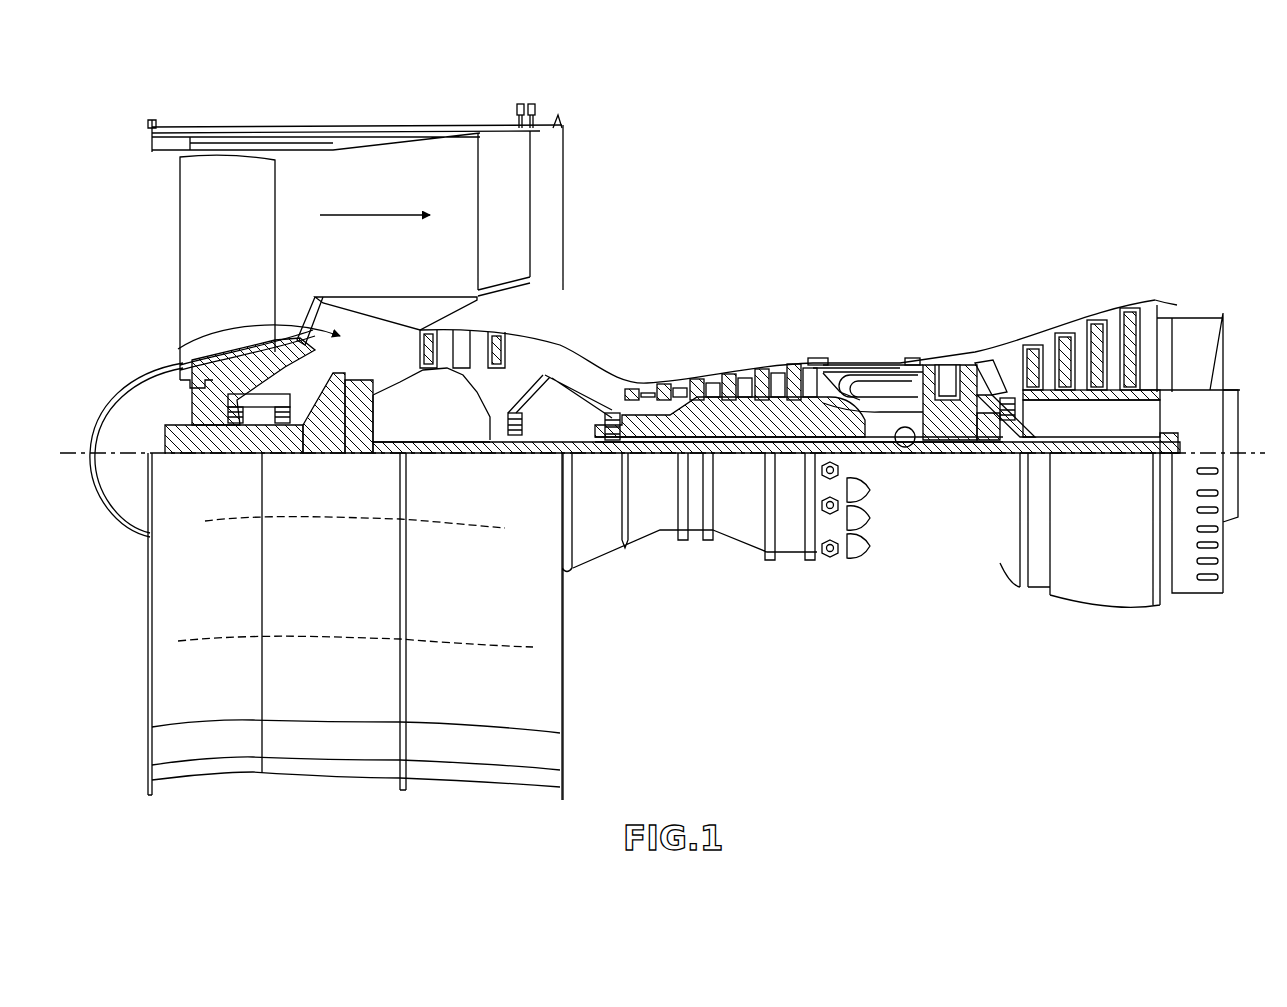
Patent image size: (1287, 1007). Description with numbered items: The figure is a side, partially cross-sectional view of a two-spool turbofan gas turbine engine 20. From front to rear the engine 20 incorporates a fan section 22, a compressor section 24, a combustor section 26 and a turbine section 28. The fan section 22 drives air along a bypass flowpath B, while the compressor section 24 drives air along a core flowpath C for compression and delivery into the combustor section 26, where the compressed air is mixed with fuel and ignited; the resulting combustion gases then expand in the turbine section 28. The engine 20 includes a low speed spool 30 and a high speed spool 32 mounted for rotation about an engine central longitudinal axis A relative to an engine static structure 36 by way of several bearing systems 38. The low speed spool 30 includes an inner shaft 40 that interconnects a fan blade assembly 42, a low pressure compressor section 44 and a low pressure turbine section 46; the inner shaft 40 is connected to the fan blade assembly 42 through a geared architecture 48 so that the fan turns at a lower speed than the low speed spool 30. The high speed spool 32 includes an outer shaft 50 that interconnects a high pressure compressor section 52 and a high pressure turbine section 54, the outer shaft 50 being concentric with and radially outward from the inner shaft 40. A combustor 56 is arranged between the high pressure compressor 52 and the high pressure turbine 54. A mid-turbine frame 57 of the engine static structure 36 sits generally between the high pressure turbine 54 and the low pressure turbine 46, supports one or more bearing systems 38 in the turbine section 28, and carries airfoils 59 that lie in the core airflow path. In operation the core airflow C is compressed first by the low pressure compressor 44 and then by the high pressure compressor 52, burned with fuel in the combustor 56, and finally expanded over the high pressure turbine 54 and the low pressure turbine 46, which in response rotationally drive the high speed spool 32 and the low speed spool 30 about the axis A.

The gas turbine engine 20 is at (1122, 99).
The fan section 22 is at (236, 121).
The compressor section 24 is at (738, 262).
The combustor section 26 is at (897, 260).
The turbine section 28 is at (1039, 262).
The low speed spool 30 is at (755, 460).
The high speed spool 32 is at (802, 413).
The engine static structure 36 is at (790, 568).
The bearing systems 38 is at (233, 418).
The inner shaft 40 is at (578, 456).
The fan blade assembly 42 is at (240, 249).
The low pressure compressor section 44 is at (490, 343).
The low pressure turbine section 46 is at (1097, 330).
The geared architecture 48 is at (355, 432).
The outer shaft 50 is at (913, 442).
The high pressure compressor section 52 is at (720, 420).
The high pressure turbine section 54 is at (947, 358).
The combustor 56 is at (868, 372).
The mid-turbine frame 57 is at (998, 350).
The airfoils 59 is at (993, 377).
The engine central longitudinal axis A is at (1245, 452).
The bypass flowpath B is at (380, 213).
The core flowpath C is at (261, 340).